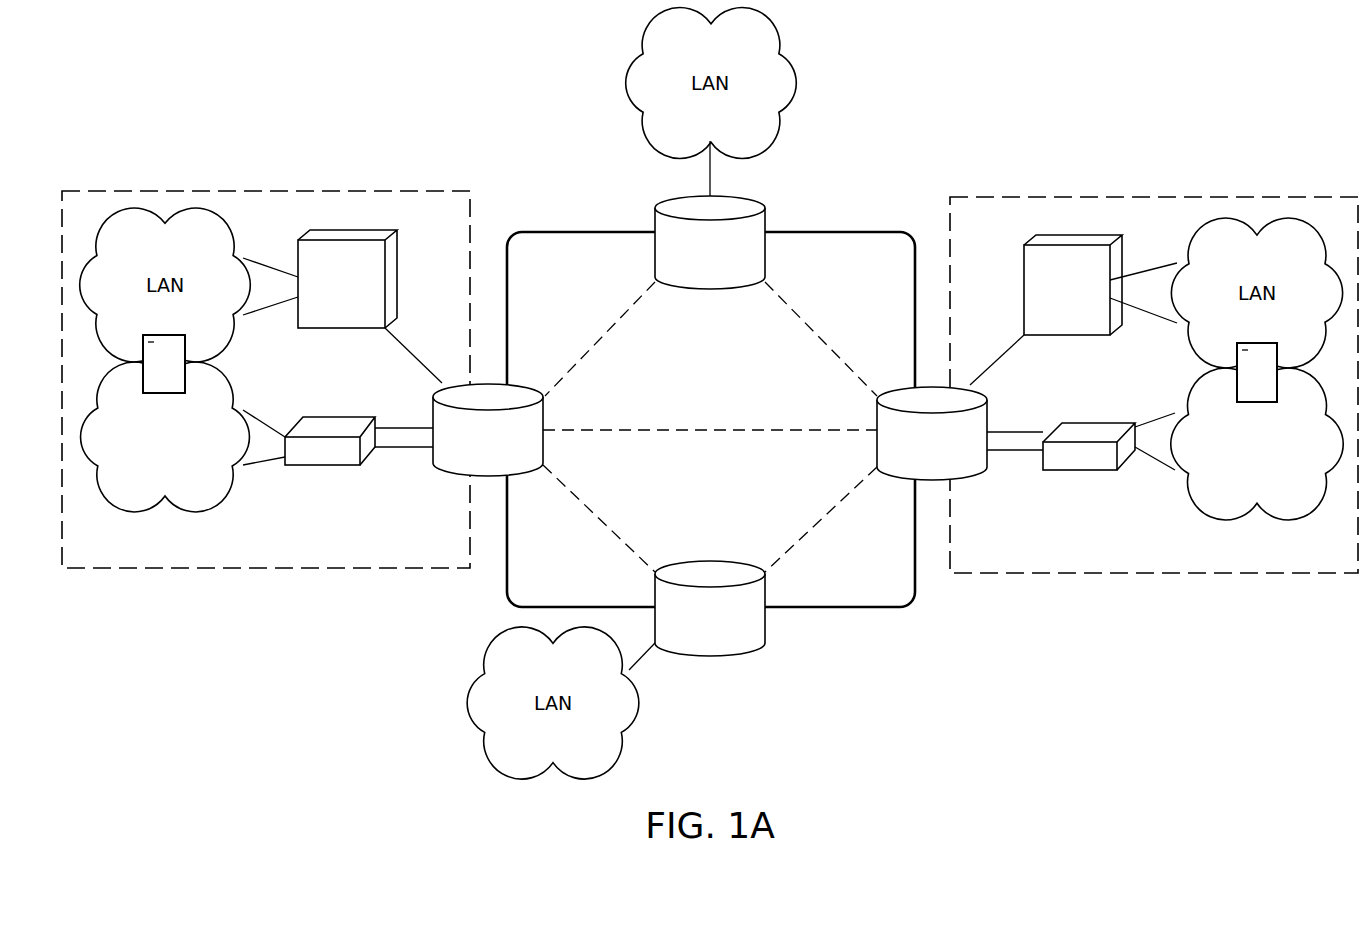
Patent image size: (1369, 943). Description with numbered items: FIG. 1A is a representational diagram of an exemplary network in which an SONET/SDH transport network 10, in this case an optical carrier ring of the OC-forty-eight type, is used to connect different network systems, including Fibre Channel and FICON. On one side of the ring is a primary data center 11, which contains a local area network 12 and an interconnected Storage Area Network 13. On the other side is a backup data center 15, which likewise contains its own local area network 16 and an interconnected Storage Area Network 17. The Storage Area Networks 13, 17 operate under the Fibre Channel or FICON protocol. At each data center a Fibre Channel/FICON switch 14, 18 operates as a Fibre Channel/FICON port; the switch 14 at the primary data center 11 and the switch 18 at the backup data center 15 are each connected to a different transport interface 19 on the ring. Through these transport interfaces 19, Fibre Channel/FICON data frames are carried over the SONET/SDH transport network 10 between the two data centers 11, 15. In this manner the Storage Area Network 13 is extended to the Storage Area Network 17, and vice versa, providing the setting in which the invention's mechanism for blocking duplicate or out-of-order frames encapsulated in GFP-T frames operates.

The SONET/SDH transport network 10 is at (925, 620).
The primary data center 11 is at (381, 536).
The local area network 12 is at (213, 353).
The Storage Area Network 13 is at (220, 492).
The Fibre Channel/FICON switch 14 is at (352, 417).
The backup data center 15 is at (1310, 555).
The local area network 16 is at (1090, 337).
The Storage Area Network 17 is at (1202, 492).
The Fibre Channel/FICON switch 18 is at (1080, 470).
The transport interface 19 is at (657, 210).